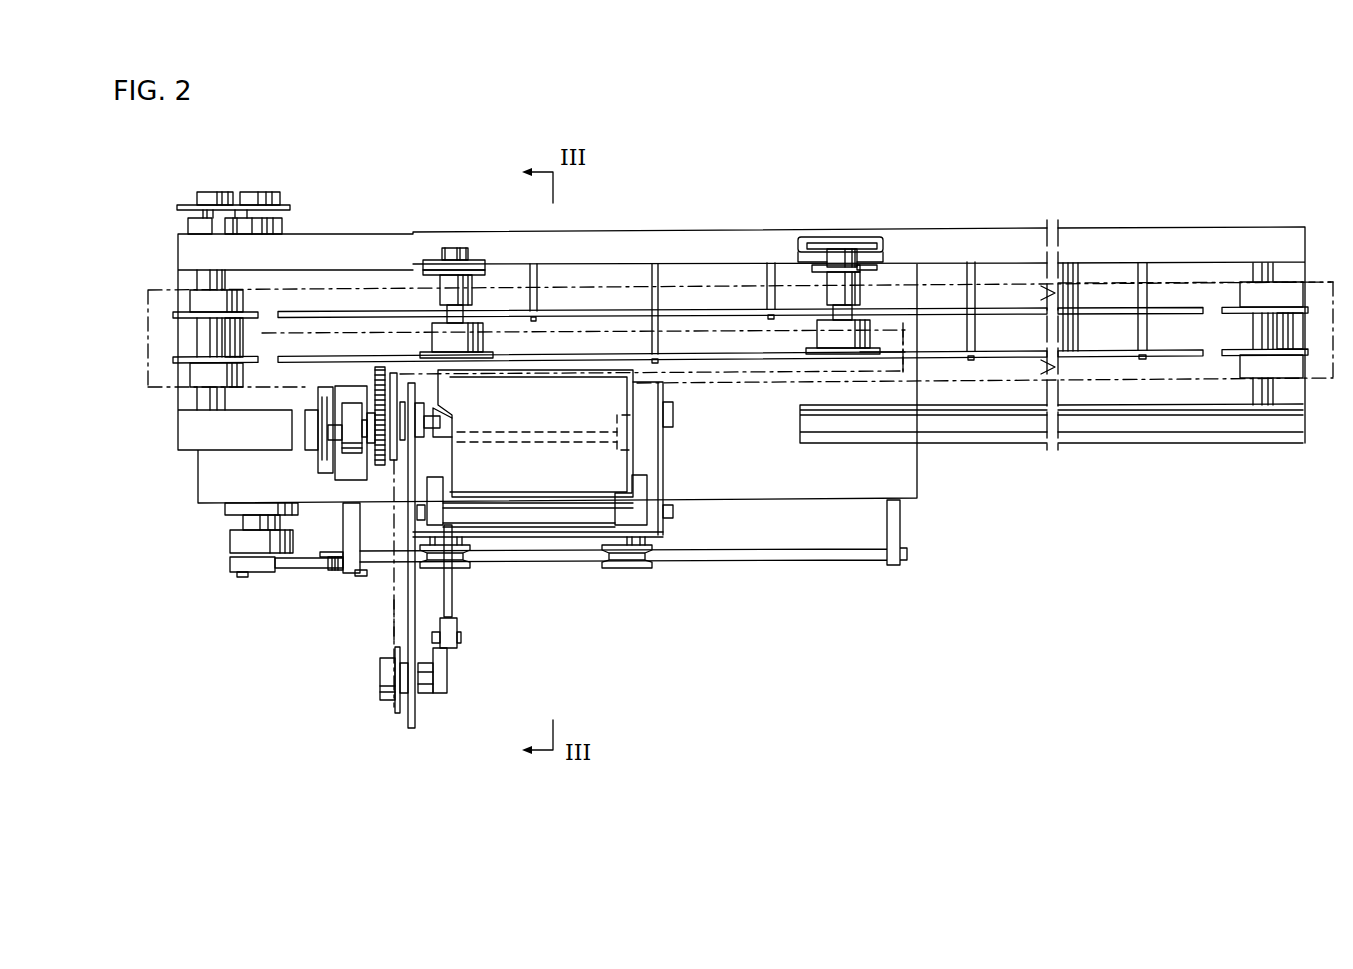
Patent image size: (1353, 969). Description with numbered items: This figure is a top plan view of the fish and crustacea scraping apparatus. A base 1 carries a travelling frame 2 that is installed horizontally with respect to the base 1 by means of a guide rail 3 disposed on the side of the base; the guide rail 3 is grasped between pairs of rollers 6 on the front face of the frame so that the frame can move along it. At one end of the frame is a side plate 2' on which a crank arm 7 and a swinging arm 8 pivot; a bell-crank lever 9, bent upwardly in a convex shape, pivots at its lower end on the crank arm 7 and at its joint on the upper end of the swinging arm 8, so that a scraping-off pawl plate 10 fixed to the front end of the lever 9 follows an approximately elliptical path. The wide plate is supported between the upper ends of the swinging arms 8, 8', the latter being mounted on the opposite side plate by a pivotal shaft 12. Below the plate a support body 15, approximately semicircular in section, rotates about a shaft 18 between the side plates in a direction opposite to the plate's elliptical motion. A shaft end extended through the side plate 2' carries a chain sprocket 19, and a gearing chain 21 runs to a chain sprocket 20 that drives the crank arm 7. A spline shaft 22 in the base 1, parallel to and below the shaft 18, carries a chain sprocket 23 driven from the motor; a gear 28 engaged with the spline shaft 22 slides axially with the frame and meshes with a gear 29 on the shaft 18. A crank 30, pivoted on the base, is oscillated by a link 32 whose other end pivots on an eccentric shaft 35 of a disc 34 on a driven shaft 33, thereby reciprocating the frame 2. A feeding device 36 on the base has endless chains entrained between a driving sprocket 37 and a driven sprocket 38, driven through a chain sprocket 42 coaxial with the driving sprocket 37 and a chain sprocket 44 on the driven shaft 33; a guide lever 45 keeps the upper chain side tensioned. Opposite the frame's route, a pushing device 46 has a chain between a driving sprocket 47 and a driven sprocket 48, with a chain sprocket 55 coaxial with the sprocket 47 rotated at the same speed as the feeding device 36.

The base 1 is at (907, 472).
The travelling frame 2 is at (538, 589).
The side plate 2' is at (431, 565).
The guide rail 3 is at (700, 557).
The rollers 6 is at (623, 563).
The crank arm 7 is at (446, 680).
The swinging arm 8 is at (470, 496).
The swinging arm 8' is at (673, 498).
The bell-crank lever 9 is at (453, 602).
The scraping-off pawl plate 10 is at (618, 392).
The pivotal shaft 12 is at (573, 520).
The support body 15 is at (452, 410).
The shaft 18 is at (432, 418).
The chain sprocket 19 is at (395, 370).
The chain sprocket 20 is at (393, 713).
The gearing chain 21 is at (390, 603).
The spline shaft 22 is at (338, 567).
The chain sprocket 23 is at (322, 385).
The gear 28 is at (380, 462).
The gear 29 is at (380, 365).
The crank 30 is at (317, 563).
The link 32 is at (282, 568).
The driven shaft 33 is at (257, 528).
The disc 34 is at (243, 547).
The eccentric shaft 35 is at (245, 575).
The feeding device 36 is at (1158, 280).
The driving sprocket 37 is at (177, 357).
The driven sprocket 38 is at (1303, 352).
The chain sprocket 42 is at (187, 203).
The chain sprocket 44 is at (260, 195).
The guide lever 45 is at (1002, 352).
The pushing device 46 is at (903, 323).
The driving sprocket 47 is at (872, 348).
The driven sprocket 48 is at (490, 360).
The chain sprocket 55 is at (817, 242).